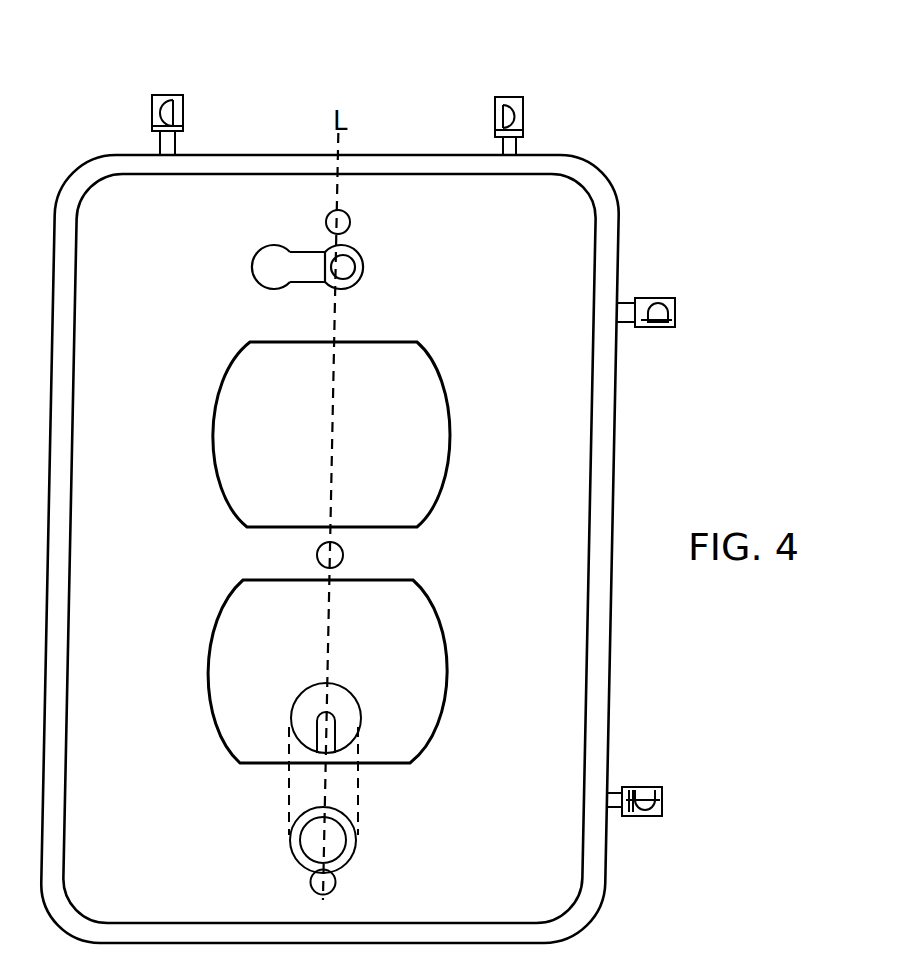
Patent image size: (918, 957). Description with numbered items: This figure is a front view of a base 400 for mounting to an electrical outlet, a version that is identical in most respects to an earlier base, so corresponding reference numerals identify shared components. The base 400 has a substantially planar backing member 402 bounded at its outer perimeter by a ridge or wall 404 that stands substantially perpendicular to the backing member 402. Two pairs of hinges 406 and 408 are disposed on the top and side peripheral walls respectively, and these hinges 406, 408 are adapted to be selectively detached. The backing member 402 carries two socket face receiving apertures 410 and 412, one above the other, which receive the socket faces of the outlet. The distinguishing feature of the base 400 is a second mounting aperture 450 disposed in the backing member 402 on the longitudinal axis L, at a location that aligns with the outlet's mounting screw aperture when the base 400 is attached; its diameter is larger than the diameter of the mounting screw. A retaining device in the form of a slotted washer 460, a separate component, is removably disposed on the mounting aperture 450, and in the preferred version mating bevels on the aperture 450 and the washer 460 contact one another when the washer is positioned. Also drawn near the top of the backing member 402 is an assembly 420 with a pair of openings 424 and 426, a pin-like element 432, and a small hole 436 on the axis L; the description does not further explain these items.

The base 400 is at (302, 120).
The backing member 402 is at (550, 251).
The ridge or wall 404 is at (586, 180).
The hinges 406 is at (168, 112).
The hinges 408 is at (657, 306).
The socket face receiving aperture 410 is at (317, 448).
The socket face receiving aperture 412 is at (312, 636).
The alignment assembly 420 is at (236, 301).
The first alignment hole 424 is at (270, 268).
The second alignment hole 426 is at (345, 262).
The alignment pin 432 is at (343, 282).
The locating hole 436 is at (340, 222).
The mounting aperture 450 is at (312, 840).
The slotted washer 460 is at (297, 703).